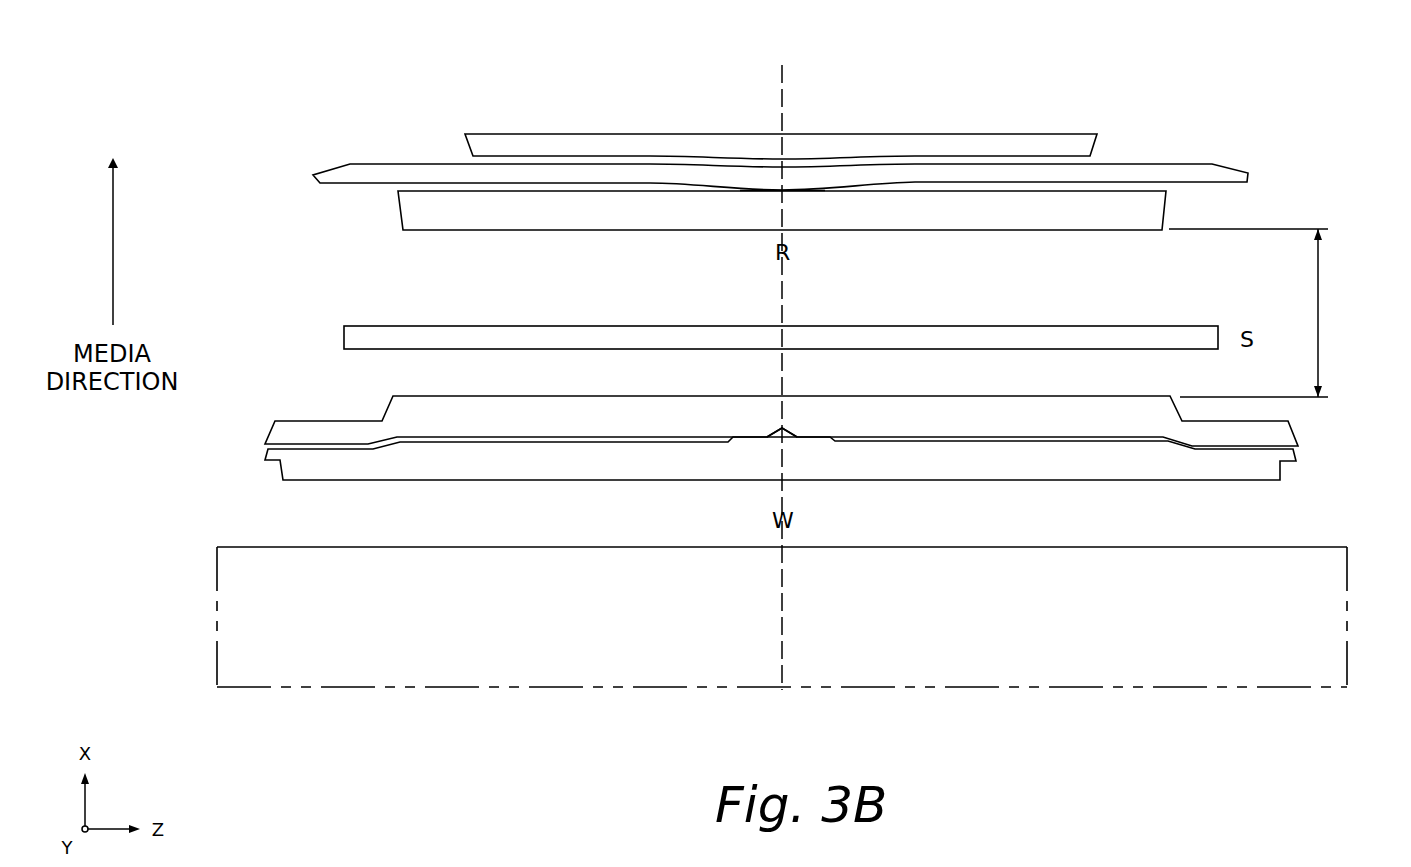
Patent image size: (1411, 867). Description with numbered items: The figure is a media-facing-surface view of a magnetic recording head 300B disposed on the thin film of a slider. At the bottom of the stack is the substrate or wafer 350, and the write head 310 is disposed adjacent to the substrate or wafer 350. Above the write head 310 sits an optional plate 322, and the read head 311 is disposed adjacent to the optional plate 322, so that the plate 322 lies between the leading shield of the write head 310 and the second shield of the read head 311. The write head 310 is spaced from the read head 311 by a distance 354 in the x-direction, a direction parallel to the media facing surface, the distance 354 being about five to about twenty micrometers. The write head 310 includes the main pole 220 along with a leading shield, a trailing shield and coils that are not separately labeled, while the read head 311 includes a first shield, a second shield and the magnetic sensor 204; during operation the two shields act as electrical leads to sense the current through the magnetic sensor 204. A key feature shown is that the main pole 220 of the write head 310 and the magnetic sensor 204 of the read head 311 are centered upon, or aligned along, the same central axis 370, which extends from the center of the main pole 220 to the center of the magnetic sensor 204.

The magnetic recording head 300B is at (233, 70).
The central axis 370 is at (780, 78).
The read head 311 is at (417, 148).
The magnetic sensor 204 is at (782, 190).
The plate 322 is at (430, 326).
The distance 354 is at (1318, 315).
The write head 310 is at (335, 405).
The main pole 220 is at (782, 428).
The substrate or wafer 350 is at (918, 630).